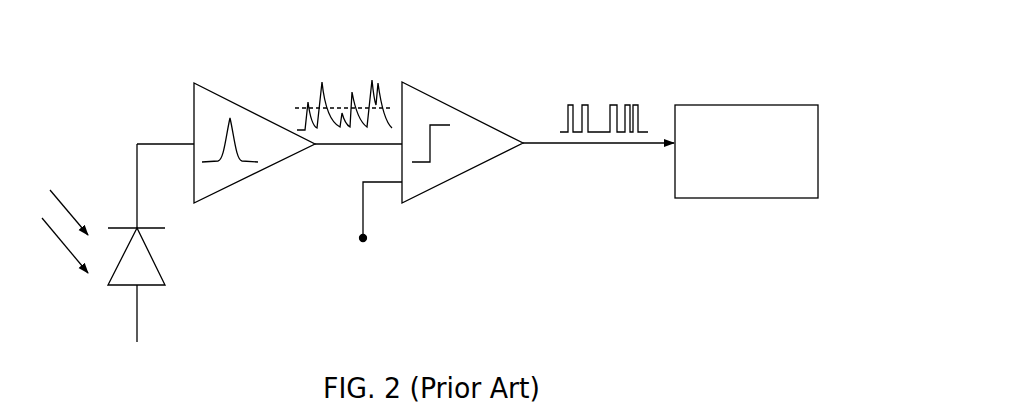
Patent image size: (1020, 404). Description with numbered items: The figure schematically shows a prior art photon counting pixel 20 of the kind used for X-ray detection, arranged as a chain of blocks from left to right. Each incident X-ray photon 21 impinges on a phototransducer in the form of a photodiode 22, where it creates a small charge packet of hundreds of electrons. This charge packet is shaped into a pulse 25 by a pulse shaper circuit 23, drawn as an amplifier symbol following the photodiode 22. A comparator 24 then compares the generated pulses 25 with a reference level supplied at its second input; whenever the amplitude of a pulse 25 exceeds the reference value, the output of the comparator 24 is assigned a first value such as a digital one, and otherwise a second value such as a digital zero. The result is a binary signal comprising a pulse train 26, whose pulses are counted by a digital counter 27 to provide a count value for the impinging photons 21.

The counting pixel 20 is at (145, 60).
The X-ray photon 21 is at (63, 231).
The photodiode 22 is at (138, 250).
The pulse shaper circuit 23 is at (210, 107).
The comparator 24 is at (452, 122).
The pulse 25 is at (328, 72).
The pulse train 26 is at (587, 89).
The digital counter 27 is at (713, 108).